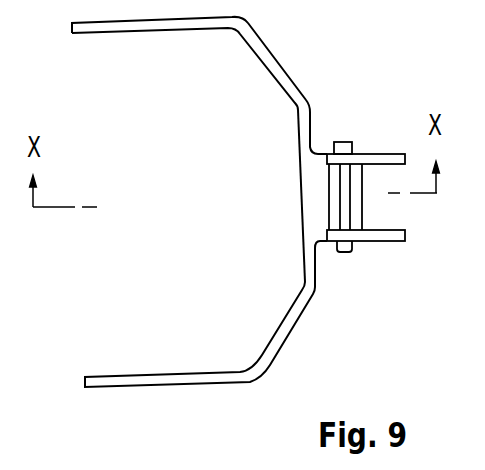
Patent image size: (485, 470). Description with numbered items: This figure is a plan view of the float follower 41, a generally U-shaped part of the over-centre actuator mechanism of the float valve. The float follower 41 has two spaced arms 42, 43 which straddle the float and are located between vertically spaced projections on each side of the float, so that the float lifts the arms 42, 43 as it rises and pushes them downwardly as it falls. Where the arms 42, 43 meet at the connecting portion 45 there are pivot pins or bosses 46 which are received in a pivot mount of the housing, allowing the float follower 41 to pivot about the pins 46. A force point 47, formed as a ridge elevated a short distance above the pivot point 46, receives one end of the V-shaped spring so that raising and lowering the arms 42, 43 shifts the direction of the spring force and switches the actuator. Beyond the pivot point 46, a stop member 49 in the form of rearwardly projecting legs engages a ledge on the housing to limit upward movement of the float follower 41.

The float follower 41 is at (232, 202).
The arm 42 is at (226, 377).
The arm 43 is at (203, 28).
The connecting portion 45 is at (358, 152).
The pivot pins 46 is at (343, 142).
The force point 47 is at (342, 192).
The stop member 49 is at (387, 237).